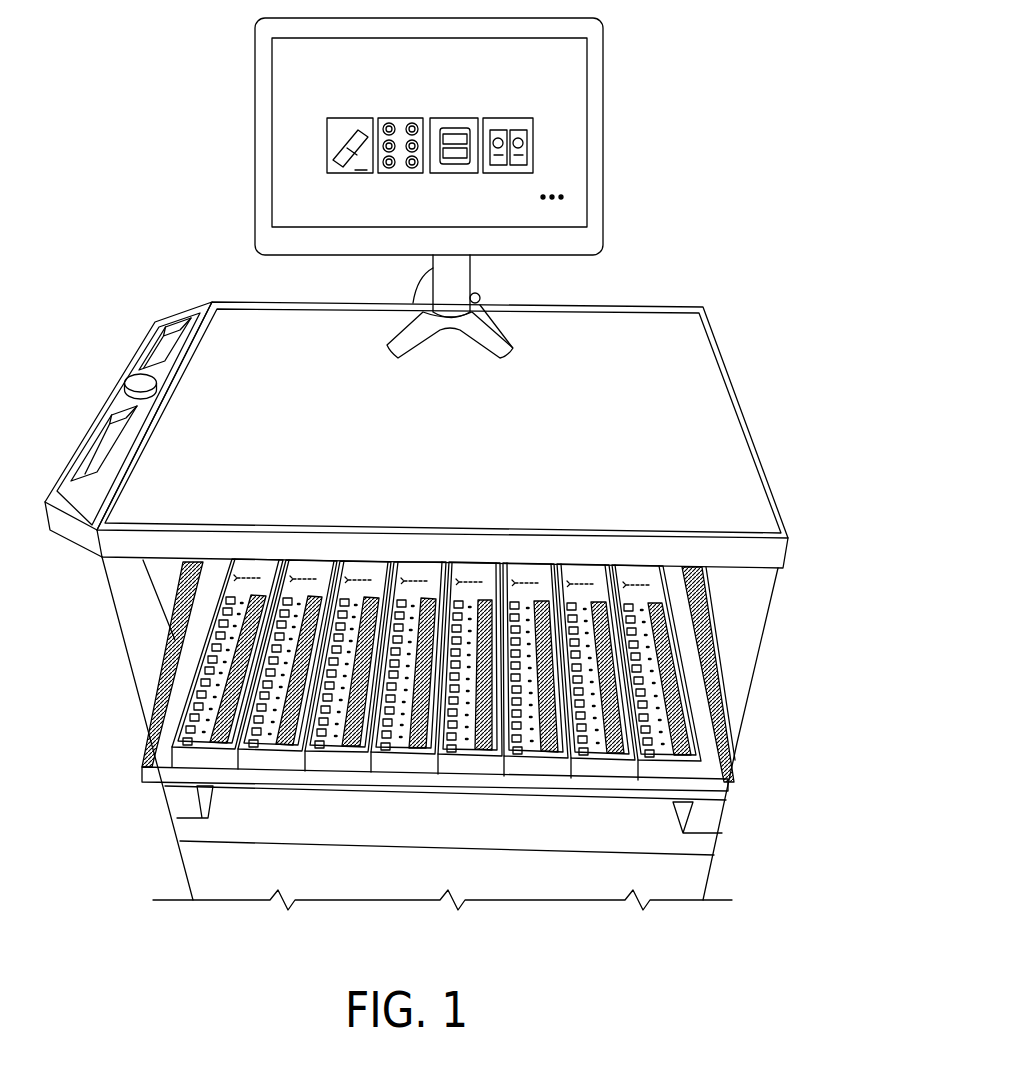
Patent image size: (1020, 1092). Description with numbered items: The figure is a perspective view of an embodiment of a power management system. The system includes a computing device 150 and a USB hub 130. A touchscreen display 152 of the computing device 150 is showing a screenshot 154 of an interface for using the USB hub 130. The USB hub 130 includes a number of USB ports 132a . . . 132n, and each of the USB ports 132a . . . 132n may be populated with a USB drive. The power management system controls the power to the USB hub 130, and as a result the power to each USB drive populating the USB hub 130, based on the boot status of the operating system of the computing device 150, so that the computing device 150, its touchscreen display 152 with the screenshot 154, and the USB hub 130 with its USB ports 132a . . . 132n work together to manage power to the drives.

The computing device 150 is at (253, 188).
The touchscreen display 152 is at (605, 193).
The screenshot 154 is at (499, 214).
The USB hub 130 is at (165, 705).
The USB port 132a is at (185, 724).
The USB port 132n is at (700, 742).